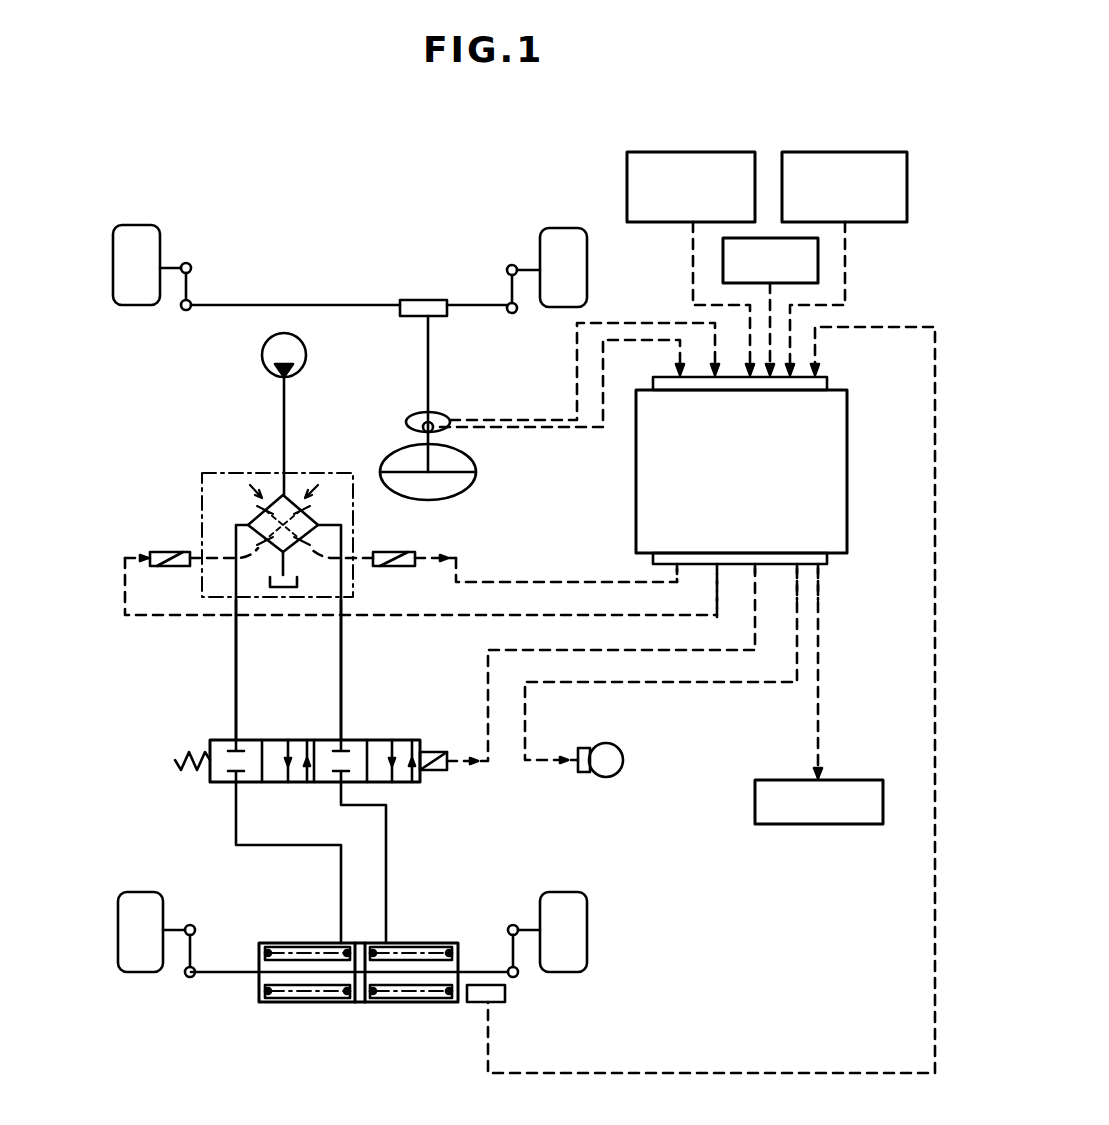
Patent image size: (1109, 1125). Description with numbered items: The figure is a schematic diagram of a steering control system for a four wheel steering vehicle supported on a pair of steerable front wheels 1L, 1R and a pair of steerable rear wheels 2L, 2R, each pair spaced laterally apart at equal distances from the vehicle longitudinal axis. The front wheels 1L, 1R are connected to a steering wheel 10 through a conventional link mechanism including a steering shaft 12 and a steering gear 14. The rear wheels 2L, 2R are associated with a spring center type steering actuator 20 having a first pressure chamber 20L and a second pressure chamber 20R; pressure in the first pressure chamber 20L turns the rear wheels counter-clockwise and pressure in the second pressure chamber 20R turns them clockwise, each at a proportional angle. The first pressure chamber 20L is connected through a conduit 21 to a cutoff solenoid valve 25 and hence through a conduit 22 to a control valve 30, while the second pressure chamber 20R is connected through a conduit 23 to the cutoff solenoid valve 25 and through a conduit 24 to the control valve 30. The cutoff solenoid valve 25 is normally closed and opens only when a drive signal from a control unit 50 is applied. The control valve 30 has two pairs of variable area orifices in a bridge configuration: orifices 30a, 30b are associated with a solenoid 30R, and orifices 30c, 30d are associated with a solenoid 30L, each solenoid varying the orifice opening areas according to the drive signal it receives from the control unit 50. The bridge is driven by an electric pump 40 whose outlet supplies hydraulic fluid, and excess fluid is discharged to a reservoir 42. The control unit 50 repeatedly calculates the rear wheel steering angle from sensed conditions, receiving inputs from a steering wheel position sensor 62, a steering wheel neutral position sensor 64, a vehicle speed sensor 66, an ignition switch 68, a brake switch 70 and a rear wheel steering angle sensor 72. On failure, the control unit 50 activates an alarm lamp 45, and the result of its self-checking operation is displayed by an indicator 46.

The front wheel 1L is at (143, 225).
The front wheel 1R is at (563, 228).
The rear wheel 2L is at (148, 975).
The rear wheel 2R is at (555, 975).
The steering wheel 10 is at (474, 466).
The steering shaft 12 is at (432, 337).
The steering gear 14 is at (415, 300).
The steering actuator 20 is at (349, 974).
The first pressure chamber 20L is at (295, 947).
The second pressure chamber 20R is at (420, 947).
The conduit 21 is at (233, 823).
The conduit 22 is at (234, 667).
The conduit 23 is at (388, 855).
The conduit 24 is at (343, 670).
The cutoff solenoid valve 25 is at (382, 740).
The control valve 30 is at (212, 473).
The variable area orifice 30a is at (262, 505).
The variable area orifice 30b is at (305, 543).
The variable area orifice 30c is at (262, 544).
The variable area orifice 30d is at (303, 504).
The solenoid 30L is at (165, 552).
The solenoid 30R is at (396, 552).
The electric pump 40 is at (264, 352).
The reservoir 42 is at (288, 590).
The alarm lamp 45 is at (622, 752).
The indicator 46 is at (852, 780).
The control unit 50 is at (847, 414).
The steering wheel position sensor 62 is at (435, 422).
The steering wheel neutral position sensor 64 is at (422, 418).
The vehicle speed sensor 66 is at (703, 152).
The ignition switch 68 is at (858, 152).
The brake switch 70 is at (818, 253).
The rear wheel steering angle sensor 72 is at (472, 1003).